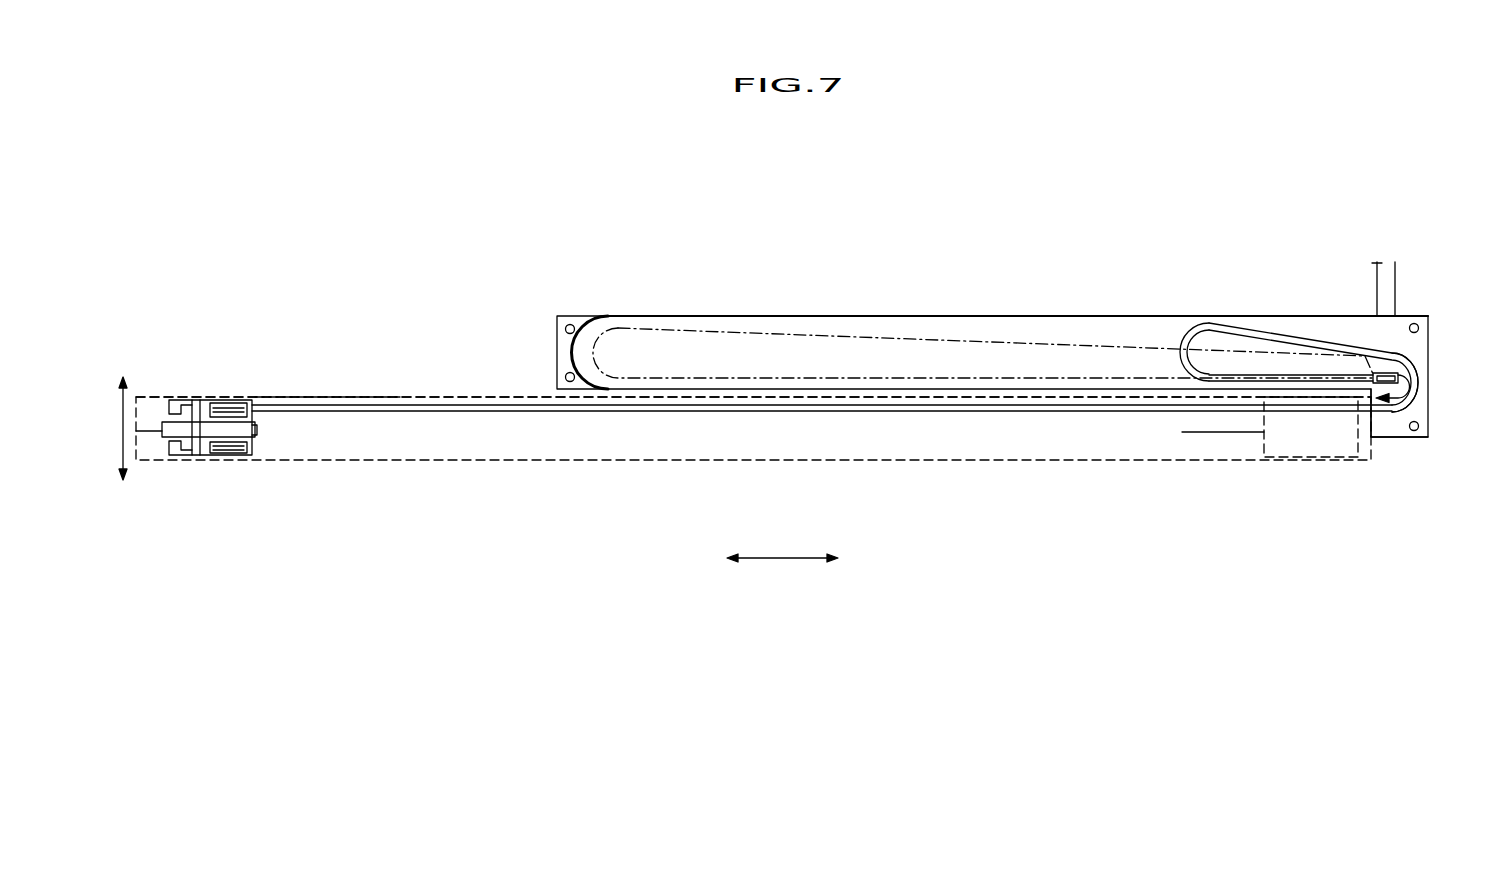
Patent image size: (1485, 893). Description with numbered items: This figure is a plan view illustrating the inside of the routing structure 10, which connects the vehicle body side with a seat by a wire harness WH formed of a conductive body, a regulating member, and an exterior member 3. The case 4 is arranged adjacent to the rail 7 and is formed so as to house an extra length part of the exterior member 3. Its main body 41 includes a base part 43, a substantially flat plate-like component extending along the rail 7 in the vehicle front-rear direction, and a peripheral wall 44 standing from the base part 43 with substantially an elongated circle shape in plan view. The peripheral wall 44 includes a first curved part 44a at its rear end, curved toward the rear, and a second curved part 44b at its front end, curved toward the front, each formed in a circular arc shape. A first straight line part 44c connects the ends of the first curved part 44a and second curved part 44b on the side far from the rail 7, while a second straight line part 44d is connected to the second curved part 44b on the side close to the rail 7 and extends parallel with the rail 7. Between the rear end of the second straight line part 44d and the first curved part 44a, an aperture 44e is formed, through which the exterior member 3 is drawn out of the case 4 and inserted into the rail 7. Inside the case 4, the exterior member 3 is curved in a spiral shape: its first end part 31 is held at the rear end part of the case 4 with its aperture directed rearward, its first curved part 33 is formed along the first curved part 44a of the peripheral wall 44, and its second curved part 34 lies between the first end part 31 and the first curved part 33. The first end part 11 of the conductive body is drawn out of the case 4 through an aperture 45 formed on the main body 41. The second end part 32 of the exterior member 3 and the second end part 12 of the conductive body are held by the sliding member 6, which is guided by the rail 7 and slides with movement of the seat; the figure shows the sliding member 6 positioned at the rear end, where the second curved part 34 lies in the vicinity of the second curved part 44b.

The routing structure 10 is at (832, 204).
The case 4 is at (651, 282).
The main body 41 is at (585, 318).
The base part 43 is at (568, 322).
The first curved part 33 is at (1424, 348).
The peripheral wall 44 is at (1275, 338).
The first curved part 44a is at (1420, 378).
The second curved part 44b is at (583, 352).
The first straight line part 44c is at (1030, 316).
The second straight line part 44d is at (1058, 398).
The aperture 44e is at (1397, 438).
The second curved part 34 is at (600, 317).
The exterior member 3 is at (786, 333).
The wire harness WH is at (920, 400).
The first end part 31 is at (1305, 374).
The aperture 45 is at (1373, 373).
The first end part 11 is at (1385, 272).
The second end part 12 is at (150, 432).
The sliding member 6 is at (202, 456).
The rail 7 is at (567, 460).
The second end part 32 is at (265, 397).